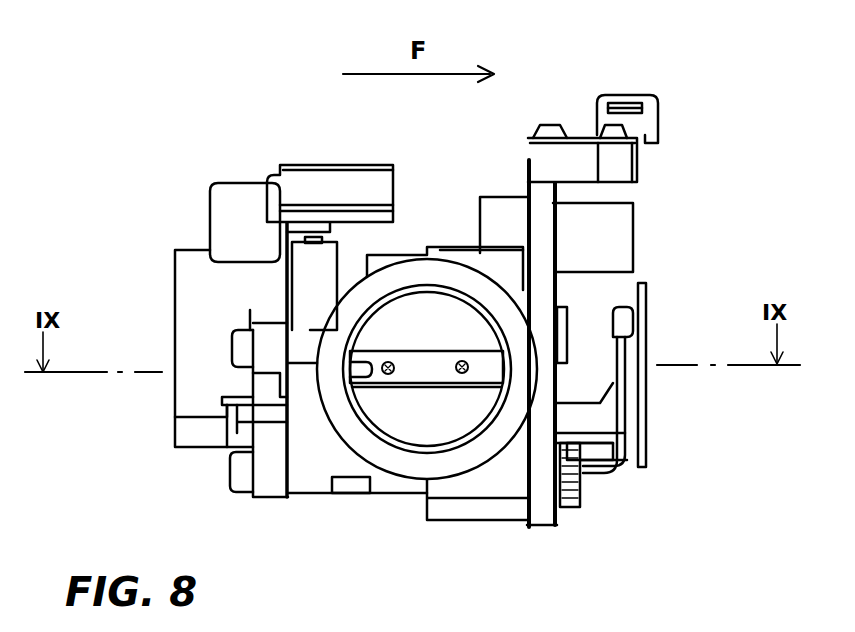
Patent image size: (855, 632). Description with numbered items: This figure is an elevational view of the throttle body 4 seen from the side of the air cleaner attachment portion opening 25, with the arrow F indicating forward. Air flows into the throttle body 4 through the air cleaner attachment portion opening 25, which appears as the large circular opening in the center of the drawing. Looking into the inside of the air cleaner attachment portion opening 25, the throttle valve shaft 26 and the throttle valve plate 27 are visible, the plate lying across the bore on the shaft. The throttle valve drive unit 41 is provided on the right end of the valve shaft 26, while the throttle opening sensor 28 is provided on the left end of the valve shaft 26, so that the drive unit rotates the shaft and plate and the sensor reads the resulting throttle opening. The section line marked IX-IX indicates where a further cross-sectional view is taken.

The throttle body 4 is at (123, 160).
The air cleaner attachment portion opening 25 is at (503, 423).
The throttle valve shaft 26 is at (483, 373).
The throttle valve plate 27 is at (455, 323).
The throttle opening sensor 28 is at (200, 297).
The throttle valve drive unit 41 is at (665, 406).